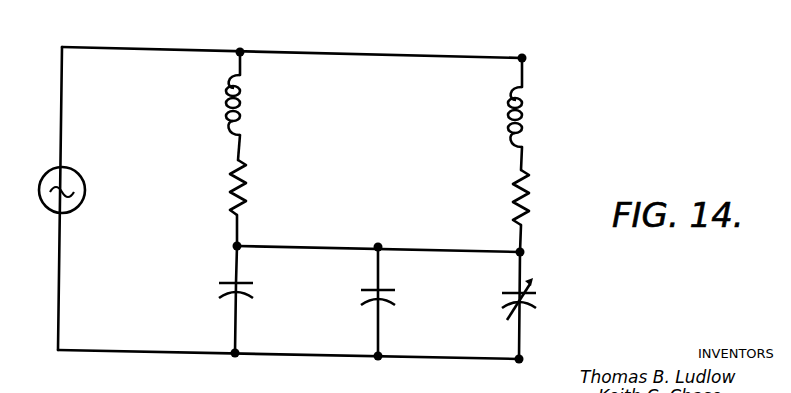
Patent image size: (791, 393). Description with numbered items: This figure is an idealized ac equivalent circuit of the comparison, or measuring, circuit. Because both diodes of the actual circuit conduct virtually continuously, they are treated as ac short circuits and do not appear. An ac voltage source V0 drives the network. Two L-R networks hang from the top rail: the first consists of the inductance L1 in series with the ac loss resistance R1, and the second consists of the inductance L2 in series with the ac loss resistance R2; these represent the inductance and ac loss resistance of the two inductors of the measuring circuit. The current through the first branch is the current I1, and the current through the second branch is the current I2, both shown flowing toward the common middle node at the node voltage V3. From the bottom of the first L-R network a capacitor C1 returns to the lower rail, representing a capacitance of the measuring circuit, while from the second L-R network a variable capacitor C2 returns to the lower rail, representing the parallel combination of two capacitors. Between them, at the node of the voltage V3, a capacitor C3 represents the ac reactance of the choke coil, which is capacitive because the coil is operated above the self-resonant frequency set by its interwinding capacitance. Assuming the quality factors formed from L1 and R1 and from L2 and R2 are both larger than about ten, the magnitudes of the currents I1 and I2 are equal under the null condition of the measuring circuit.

The ac voltage source V0 is at (41, 153).
The inductance of the first inductor L1 is at (249, 105).
The ac loss resistance of the first inductor R1 is at (256, 187).
The first branch current I1 is at (338, 226).
The node voltage V3 is at (379, 237).
The second branch current I2 is at (415, 228).
The inductance of the second inductor L2 is at (534, 117).
The ac loss resistance of the second inductor R2 is at (536, 197).
The first capacitor C1 is at (252, 289).
The third capacitor C3 is at (394, 295).
The second capacitor C2 is at (535, 299).